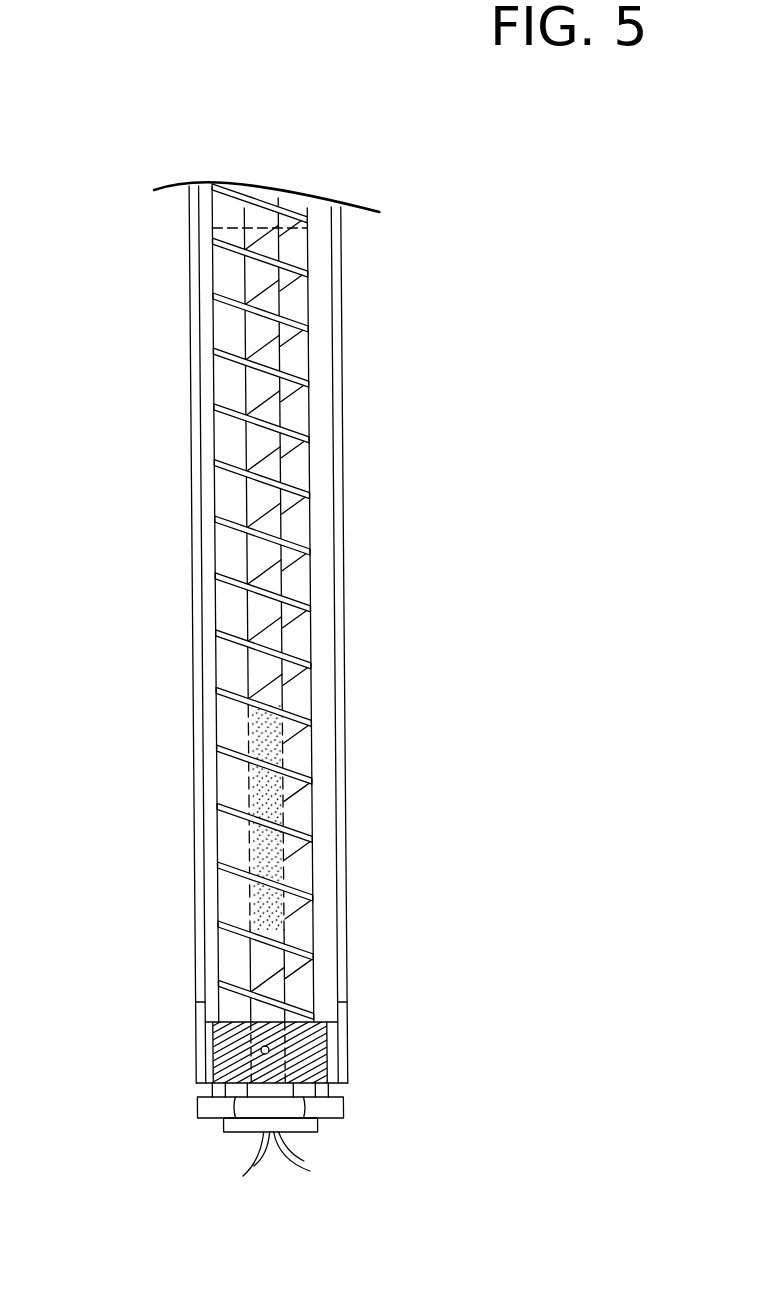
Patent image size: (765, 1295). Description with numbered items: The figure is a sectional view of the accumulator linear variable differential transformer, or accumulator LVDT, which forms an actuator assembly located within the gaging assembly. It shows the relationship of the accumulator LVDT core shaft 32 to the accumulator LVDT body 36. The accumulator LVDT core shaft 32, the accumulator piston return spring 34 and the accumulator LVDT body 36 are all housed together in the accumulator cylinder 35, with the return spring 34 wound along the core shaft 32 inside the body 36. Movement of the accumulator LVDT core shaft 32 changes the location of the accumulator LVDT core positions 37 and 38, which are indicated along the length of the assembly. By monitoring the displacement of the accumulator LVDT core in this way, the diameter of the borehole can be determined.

The accumulator LVDT core shaft 32 is at (233, 210).
The accumulator piston return spring 34 is at (203, 399).
The accumulator cylinder 35 is at (183, 651).
The accumulator LVDT body 36 is at (208, 888).
The accumulator LVDT core position 37 is at (355, 272).
The accumulator LVDT core position 38 is at (347, 505).